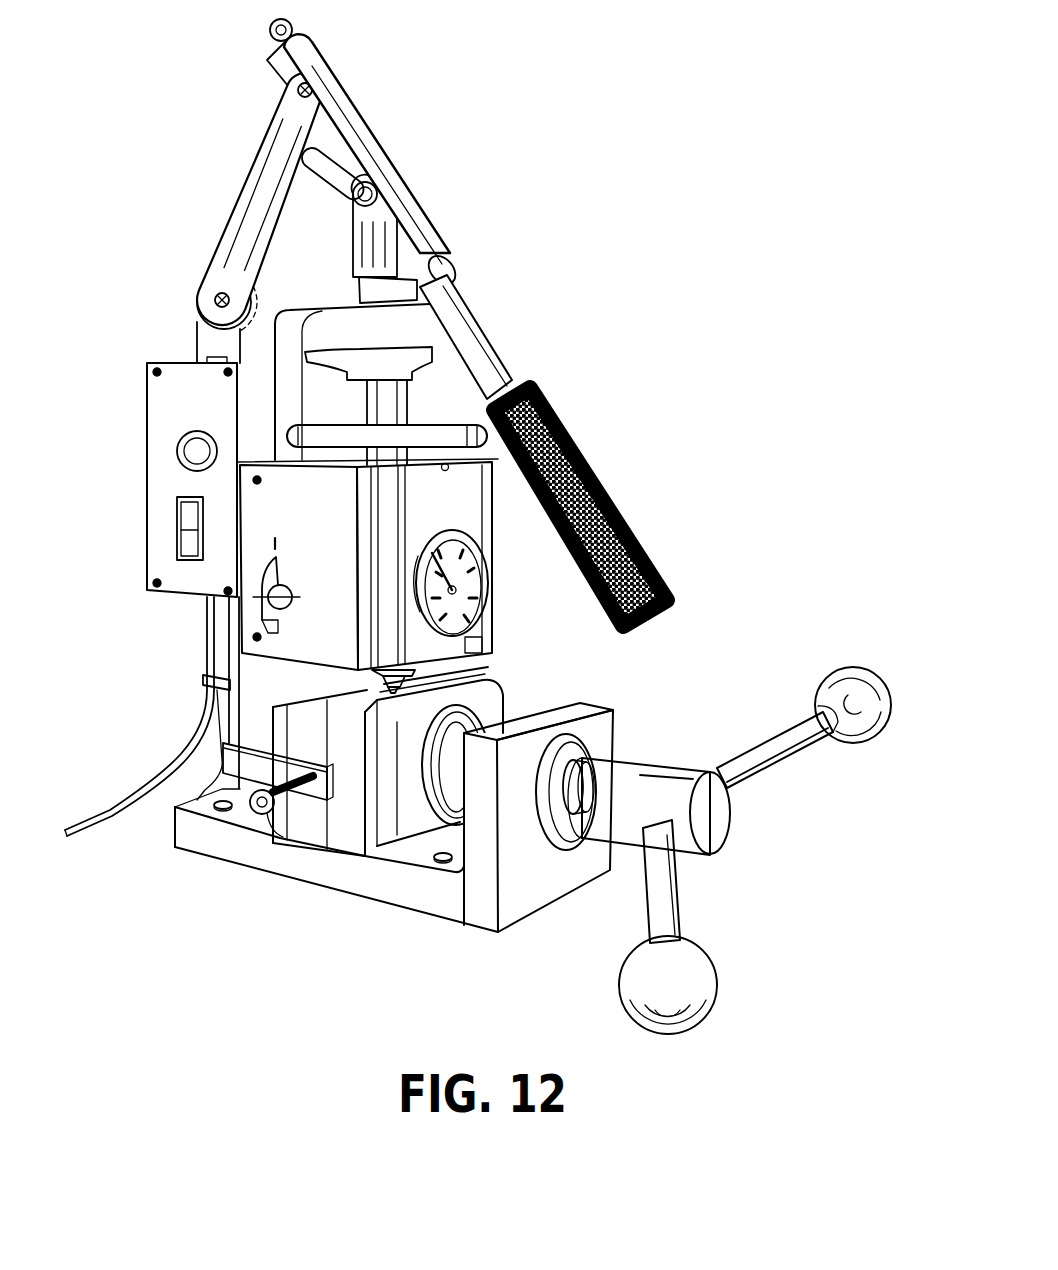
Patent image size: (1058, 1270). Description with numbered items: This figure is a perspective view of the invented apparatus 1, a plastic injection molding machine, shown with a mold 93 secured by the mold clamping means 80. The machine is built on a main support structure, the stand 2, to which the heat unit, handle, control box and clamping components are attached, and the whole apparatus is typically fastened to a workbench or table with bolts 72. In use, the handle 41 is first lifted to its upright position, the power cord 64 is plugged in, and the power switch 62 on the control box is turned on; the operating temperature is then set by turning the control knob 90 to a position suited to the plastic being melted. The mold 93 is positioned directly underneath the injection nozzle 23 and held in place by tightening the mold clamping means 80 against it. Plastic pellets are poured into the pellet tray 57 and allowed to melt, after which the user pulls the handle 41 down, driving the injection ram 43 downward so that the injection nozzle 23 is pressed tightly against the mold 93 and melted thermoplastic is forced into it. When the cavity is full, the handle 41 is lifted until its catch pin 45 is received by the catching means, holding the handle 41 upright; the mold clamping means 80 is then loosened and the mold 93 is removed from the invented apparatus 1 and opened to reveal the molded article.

The invented apparatus 1 is at (730, 450).
The stand 2 is at (520, 893).
The injection nozzle 23 is at (430, 668).
The handle 41 is at (480, 312).
The injection ram 43 is at (393, 400).
The catch pin 45 is at (275, 30).
The pellet tray 57 is at (341, 438).
The power switch 62 is at (178, 537).
The power cord 64 is at (165, 778).
The bolts 72 is at (222, 807).
The mold clamping means 80 is at (712, 820).
The control knob 90 is at (300, 597).
The mold 93 is at (347, 815).